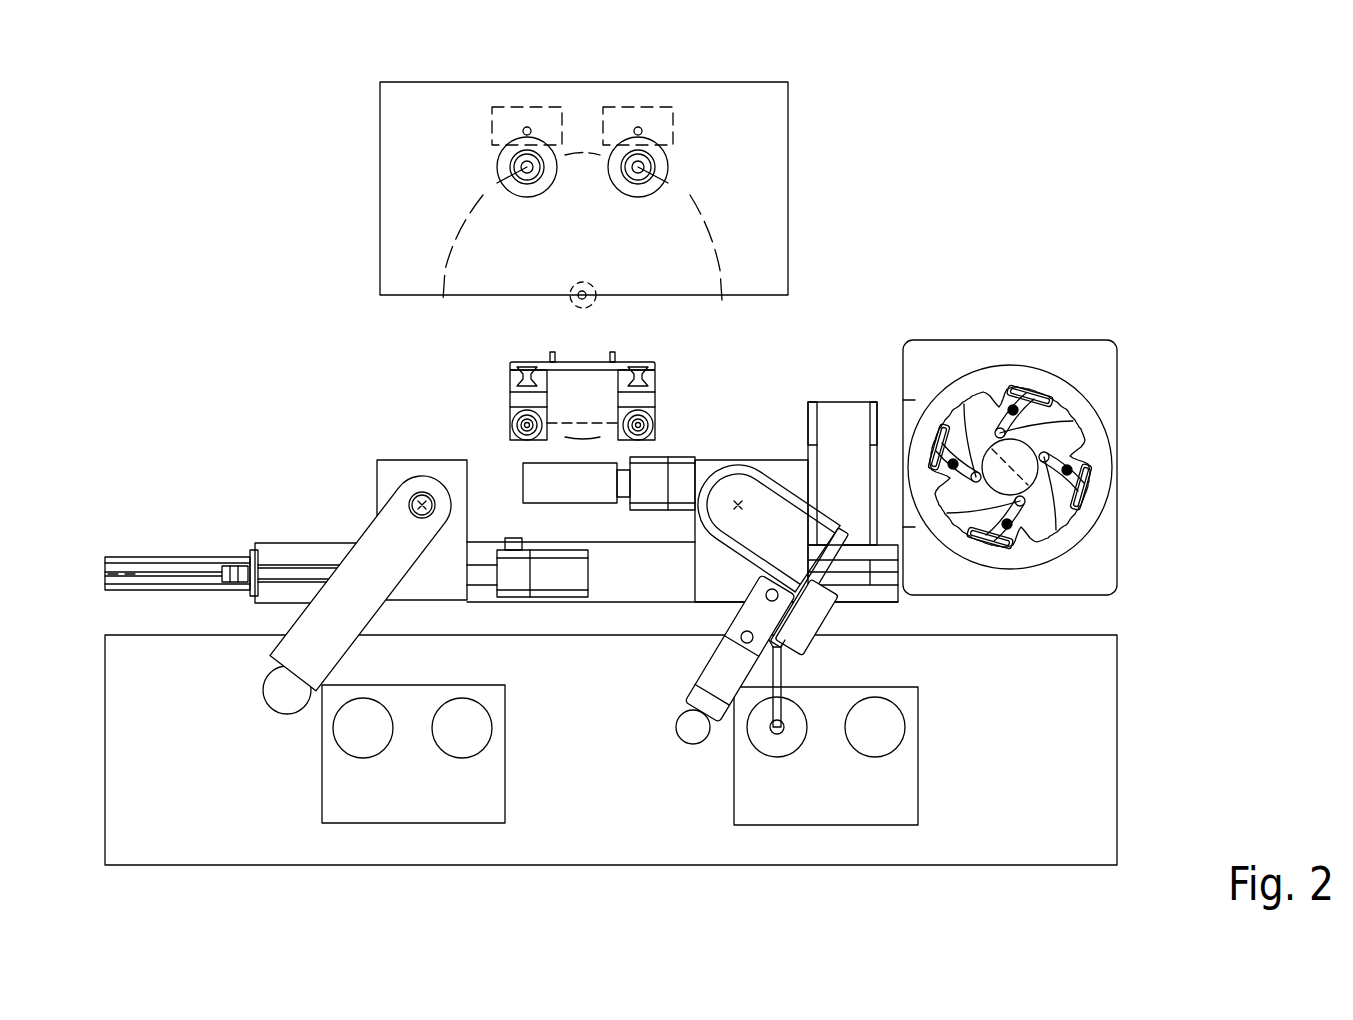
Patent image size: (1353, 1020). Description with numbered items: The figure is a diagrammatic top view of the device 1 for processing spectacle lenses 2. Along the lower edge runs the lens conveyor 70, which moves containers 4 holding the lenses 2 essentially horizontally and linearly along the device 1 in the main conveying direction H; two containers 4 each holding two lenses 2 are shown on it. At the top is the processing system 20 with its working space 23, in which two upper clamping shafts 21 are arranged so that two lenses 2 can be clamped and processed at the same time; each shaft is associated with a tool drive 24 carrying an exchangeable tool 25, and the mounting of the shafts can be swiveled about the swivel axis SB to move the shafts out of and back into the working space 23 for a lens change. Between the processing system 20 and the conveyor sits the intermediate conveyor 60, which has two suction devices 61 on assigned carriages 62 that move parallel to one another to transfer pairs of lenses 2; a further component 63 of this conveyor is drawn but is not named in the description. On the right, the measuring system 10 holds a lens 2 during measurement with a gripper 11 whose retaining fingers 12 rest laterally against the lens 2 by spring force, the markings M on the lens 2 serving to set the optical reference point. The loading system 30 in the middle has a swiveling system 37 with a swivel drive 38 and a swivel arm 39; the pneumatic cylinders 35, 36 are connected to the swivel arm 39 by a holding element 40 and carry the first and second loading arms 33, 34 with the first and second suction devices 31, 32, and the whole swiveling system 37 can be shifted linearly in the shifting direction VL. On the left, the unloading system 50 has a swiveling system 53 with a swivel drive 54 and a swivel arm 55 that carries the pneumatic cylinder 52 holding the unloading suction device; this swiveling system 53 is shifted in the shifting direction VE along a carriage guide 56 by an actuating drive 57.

The device 1 is at (185, 160).
The lens 2 is at (503, 165).
The containers 4 is at (415, 790).
The measuring system 10 is at (1045, 330).
The gripper 11 is at (1062, 437).
The retaining fingers 12 is at (1060, 512).
The processing system 20 is at (703, 192).
The upper clamping shafts 21 is at (513, 172).
The working space 23 is at (770, 203).
The tool drive 24 is at (538, 107).
The tool 25 is at (526, 128).
The loading system 30 is at (795, 455).
The first suction device 31 is at (775, 735).
The second suction device 32 is at (685, 727).
The first loading arm 33 is at (775, 688).
The second loading arm 34 is at (718, 668).
The pneumatic cylinder 35 is at (817, 615).
The pneumatic cylinder 36 is at (746, 625).
The swiveling system 37 is at (752, 462).
The swivel drive 38 is at (726, 472).
The swivel arm 39 is at (775, 523).
The holding element 40 is at (817, 552).
The unloading system 50 is at (375, 440).
The pneumatic cylinder 52 is at (278, 700).
The swiveling system 53 is at (420, 460).
The swivel drive 54 is at (445, 490).
The swivel arm 55 is at (380, 545).
The carriage guide 56 is at (295, 560).
The actuating drive 57 is at (150, 565).
The intermediate conveyor 60 is at (697, 420).
The suction device 61 is at (624, 420).
The carriage 62 is at (515, 405).
The gripper jaw 63 is at (515, 375).
The lens conveyor 70 is at (635, 830).
The swivel axis SB is at (582, 295).
The shifting direction VE is at (460, 575).
The shifting direction VL is at (652, 527).
The markings M is at (1100, 462).
The main conveying direction H is at (1070, 750).